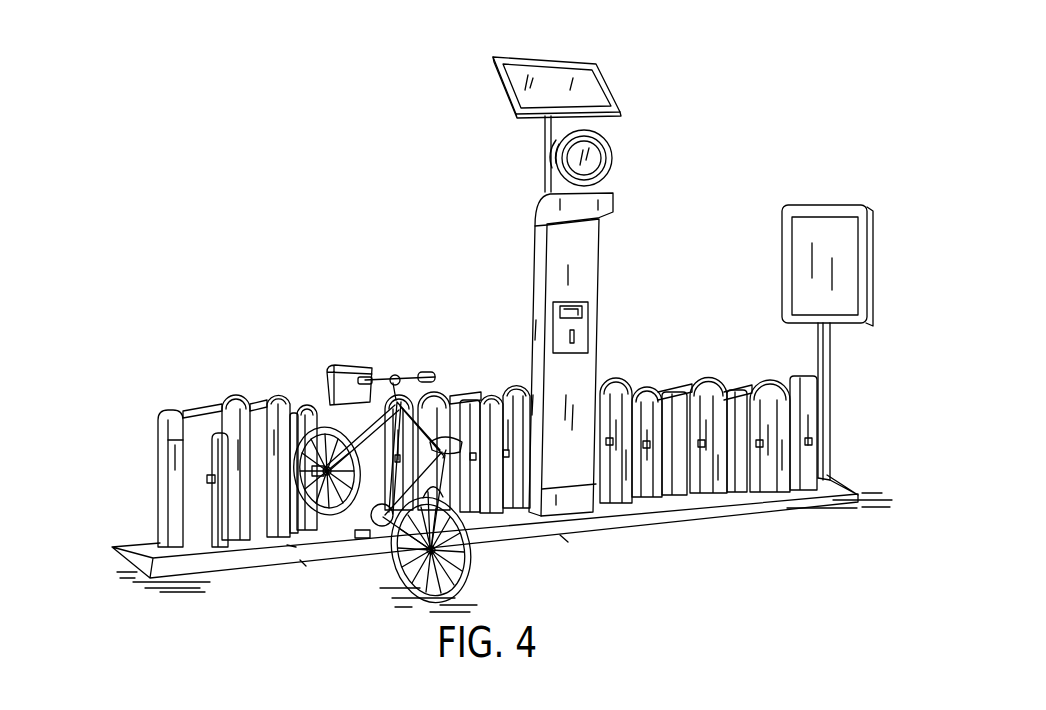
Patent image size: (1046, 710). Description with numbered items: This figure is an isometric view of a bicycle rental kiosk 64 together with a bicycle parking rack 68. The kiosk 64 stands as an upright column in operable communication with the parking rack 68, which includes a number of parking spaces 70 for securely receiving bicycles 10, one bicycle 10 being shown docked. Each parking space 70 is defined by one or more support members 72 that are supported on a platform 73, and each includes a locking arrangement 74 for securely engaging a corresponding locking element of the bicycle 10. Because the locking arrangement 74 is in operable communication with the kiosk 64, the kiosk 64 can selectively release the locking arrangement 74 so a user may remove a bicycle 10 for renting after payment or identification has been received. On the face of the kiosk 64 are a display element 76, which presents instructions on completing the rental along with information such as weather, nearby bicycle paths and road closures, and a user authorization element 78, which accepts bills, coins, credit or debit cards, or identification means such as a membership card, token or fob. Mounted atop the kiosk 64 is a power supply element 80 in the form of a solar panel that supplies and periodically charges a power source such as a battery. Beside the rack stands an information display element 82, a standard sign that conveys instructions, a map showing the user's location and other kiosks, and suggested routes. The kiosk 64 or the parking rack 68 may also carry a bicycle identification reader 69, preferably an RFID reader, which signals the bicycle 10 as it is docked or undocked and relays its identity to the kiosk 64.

The bicycle 10 is at (412, 601).
The bicycle rental kiosk 64 is at (749, 157).
The bicycle parking rack 68 is at (469, 375).
The bicycle identification reader 69 is at (307, 412).
The parking space 70 is at (262, 385).
The support member 72 is at (168, 433).
The platform 73 is at (178, 566).
The locking arrangement 74 is at (178, 485).
The display element 76 is at (565, 310).
The user authorization element 78 is at (579, 337).
The power supply element 80 is at (575, 83).
The information display element 82 is at (822, 237).